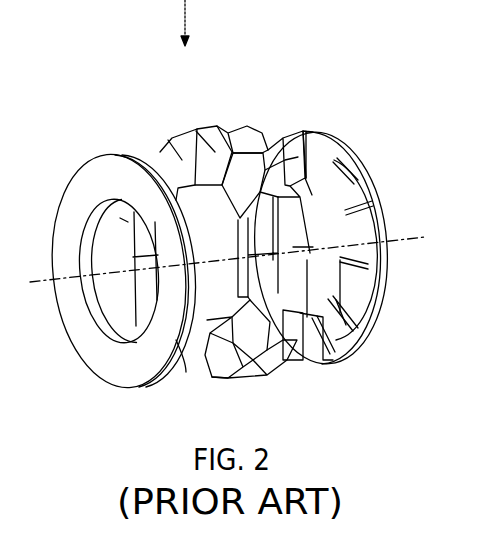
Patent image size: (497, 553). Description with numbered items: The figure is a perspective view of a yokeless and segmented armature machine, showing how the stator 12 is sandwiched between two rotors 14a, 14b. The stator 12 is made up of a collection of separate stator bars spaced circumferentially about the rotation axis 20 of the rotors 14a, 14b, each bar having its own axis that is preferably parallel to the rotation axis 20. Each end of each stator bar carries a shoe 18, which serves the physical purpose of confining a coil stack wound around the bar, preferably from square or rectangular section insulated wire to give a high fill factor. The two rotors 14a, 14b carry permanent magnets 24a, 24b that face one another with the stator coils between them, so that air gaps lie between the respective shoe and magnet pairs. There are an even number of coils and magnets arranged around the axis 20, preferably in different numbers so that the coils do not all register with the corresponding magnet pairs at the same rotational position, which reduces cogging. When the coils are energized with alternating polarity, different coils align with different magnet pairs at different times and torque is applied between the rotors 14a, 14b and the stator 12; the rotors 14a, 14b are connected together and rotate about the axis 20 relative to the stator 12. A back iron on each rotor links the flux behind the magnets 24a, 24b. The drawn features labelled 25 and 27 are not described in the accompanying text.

The stator 12 is at (245, 125).
The rotor 14a is at (112, 155).
The rotor 14b is at (333, 131).
The shoe 18 is at (228, 363).
The rotation axis 20 is at (41, 287).
The permanent magnet 24a is at (186, 368).
The permanent magnet 24b is at (347, 327).
The spokes 25 is at (367, 190).
The fins 27 is at (182, 160).